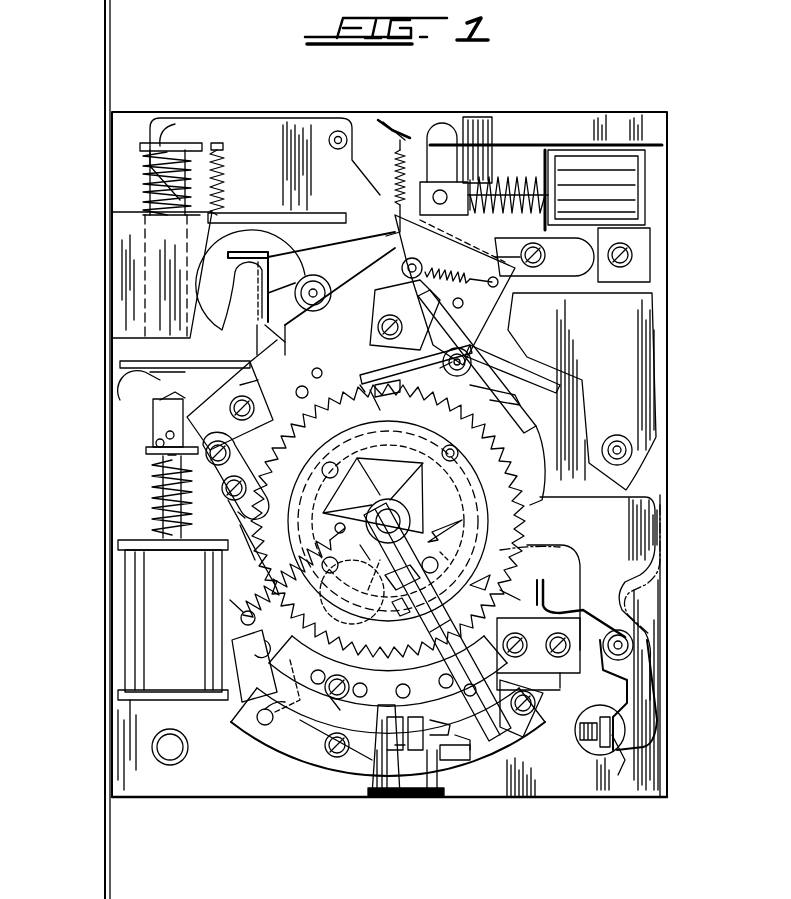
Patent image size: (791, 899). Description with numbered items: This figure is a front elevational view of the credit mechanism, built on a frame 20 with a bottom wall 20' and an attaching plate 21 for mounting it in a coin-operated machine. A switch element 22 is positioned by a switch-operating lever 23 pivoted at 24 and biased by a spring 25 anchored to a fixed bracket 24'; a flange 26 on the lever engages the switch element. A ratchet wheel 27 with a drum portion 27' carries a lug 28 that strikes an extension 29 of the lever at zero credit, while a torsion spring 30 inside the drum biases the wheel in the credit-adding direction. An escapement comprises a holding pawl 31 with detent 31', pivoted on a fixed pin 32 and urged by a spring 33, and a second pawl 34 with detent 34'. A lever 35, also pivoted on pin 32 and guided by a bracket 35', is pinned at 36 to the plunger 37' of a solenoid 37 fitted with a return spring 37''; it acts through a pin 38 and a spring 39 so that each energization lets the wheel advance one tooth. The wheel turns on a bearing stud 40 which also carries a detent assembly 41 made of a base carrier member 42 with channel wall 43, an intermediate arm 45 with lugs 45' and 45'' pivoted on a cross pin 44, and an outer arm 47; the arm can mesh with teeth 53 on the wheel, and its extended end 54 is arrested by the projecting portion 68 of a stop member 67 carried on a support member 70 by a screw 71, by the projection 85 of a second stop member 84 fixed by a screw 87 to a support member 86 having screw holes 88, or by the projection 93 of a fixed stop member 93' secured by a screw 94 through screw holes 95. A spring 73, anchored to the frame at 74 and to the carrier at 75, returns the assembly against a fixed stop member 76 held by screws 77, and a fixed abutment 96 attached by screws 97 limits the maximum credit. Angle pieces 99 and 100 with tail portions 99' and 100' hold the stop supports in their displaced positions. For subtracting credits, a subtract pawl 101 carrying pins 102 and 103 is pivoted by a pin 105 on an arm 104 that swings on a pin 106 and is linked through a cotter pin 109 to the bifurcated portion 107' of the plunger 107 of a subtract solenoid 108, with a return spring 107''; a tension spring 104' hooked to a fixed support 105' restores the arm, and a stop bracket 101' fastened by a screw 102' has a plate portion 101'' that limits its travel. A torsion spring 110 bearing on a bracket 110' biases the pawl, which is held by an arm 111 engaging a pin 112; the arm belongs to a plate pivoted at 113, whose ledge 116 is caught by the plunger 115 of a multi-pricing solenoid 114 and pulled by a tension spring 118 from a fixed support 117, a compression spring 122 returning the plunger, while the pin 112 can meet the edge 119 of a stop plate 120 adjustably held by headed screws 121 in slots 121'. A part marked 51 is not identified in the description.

The frame 20 is at (389, 463).
The bottom wall 20' is at (389, 818).
The attaching plate 21 is at (105, 126).
The switch element 22 is at (590, 755).
The switch-operating lever 23 is at (622, 530).
The pivot pin 24 is at (629, 624).
The fixed bracket 24' is at (581, 596).
The spring 25 is at (586, 605).
The flange 26 is at (655, 756).
The ratchet wheel 27 is at (244, 475).
The drum portion 27' is at (401, 497).
The switch-operating lug 28 is at (340, 606).
The extension 29 is at (493, 576).
The torsion spring 30 is at (450, 477).
The holding pawl 31 is at (412, 364).
The detent 31' is at (394, 395).
The fixed pin 32 is at (462, 347).
The spring 33 is at (405, 315).
The second pawl 34 is at (502, 397).
The detent 34' is at (545, 465).
The lever 35 is at (472, 290).
The bracket 35' is at (546, 130).
The pin 36 is at (440, 190).
The solenoid 37 is at (595, 190).
The plunger 37' is at (508, 187).
The return spring 37'' is at (508, 182).
The laterally-projecting pin 38 is at (505, 333).
The spring 39 is at (414, 260).
The bearing stud 40 is at (437, 622).
The detent assembly 41 is at (453, 526).
The base carrier member 42 is at (330, 471).
The channel wall 43 is at (413, 595).
The cross pin 44 is at (396, 612).
The intermediate channeled arm 45 is at (446, 681).
The channel wall 45' is at (427, 637).
The channel wall 45'' is at (500, 598).
The outer arm 47 is at (396, 583).
The link 51 is at (365, 575).
The teeth 53 is at (236, 514).
The extended outer end 54 is at (472, 760).
The stop member 67 is at (433, 768).
The projecting portion 68 is at (456, 795).
The support member 70 is at (412, 800).
The screw 71 is at (525, 716).
The spring 73 is at (262, 598).
The spring anchorage on frame 74 is at (253, 651).
The spring attachment on carrier head 75 is at (354, 559).
The fixed stop member 76 is at (566, 673).
The screws 77 is at (538, 645).
The second stop member 84 is at (374, 760).
The projection 85 is at (378, 765).
The support member 86 is at (406, 808).
The screw 87 is at (328, 756).
The screw holes 88 is at (275, 752).
The projection 93 is at (272, 686).
The fixed stop member 93' is at (264, 708).
The screw 94 is at (367, 685).
The screw holes 95 is at (375, 691).
The fixed abutment 96 is at (240, 527).
The screws 97 is at (226, 502).
The angle piece 99 is at (421, 753).
The tail portion 99' is at (426, 821).
The angle piece 100 is at (393, 753).
The tail portion 100' is at (398, 802).
The subtract pawl 101 is at (232, 392).
The fixed stop bracket 101' is at (232, 382).
The horizontal plate portion 101'' is at (179, 356).
The pin 102 is at (304, 365).
The screw 102' is at (253, 423).
The pin 103 is at (304, 384).
The arm 104 is at (354, 361).
The tension spring 104' is at (262, 245).
The pin 105 is at (308, 267).
The fixed support 105' is at (412, 110).
The pin 106 is at (617, 440).
The plunger 107 is at (157, 492).
The bifurcated portion 107' is at (159, 389).
The return spring 107'' is at (146, 467).
The subtract solenoid 108 is at (190, 594).
The cotter pin 109 is at (160, 425).
The torsion spring 110 is at (250, 292).
The bracket 110' is at (248, 277).
The arm 111 is at (330, 399).
The pin 112 is at (280, 170).
The pin 113 is at (343, 131).
The multi-pricing solenoid 114 is at (145, 280).
The plunger 115 is at (150, 186).
The horizontal ledge 116 is at (160, 133).
The fixed support 117 is at (248, 214).
The tension spring 118 is at (230, 172).
The edge 119 is at (290, 337).
The fixed stop plate 120 is at (556, 247).
The headed screws 121 is at (486, 267).
The slots 121' is at (470, 306).
The compression spring 122 is at (150, 210).